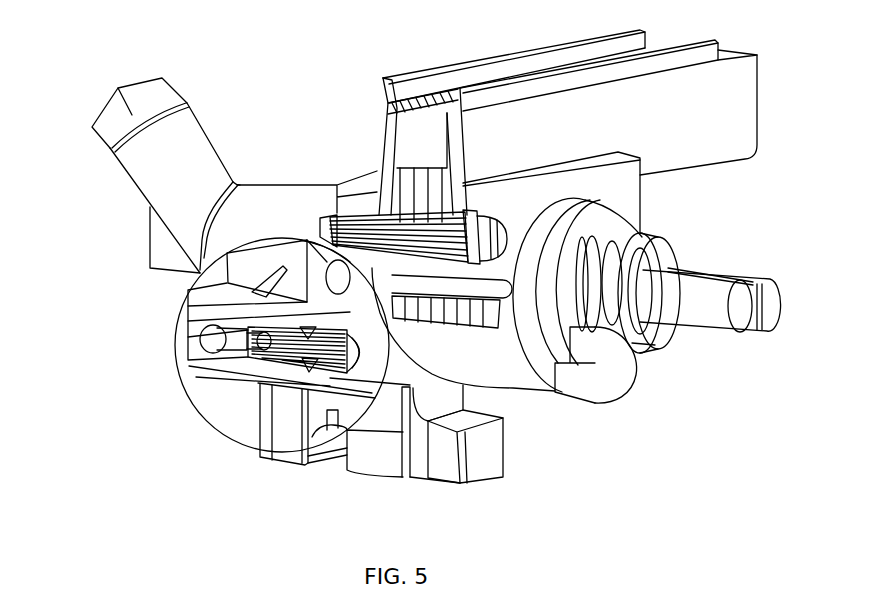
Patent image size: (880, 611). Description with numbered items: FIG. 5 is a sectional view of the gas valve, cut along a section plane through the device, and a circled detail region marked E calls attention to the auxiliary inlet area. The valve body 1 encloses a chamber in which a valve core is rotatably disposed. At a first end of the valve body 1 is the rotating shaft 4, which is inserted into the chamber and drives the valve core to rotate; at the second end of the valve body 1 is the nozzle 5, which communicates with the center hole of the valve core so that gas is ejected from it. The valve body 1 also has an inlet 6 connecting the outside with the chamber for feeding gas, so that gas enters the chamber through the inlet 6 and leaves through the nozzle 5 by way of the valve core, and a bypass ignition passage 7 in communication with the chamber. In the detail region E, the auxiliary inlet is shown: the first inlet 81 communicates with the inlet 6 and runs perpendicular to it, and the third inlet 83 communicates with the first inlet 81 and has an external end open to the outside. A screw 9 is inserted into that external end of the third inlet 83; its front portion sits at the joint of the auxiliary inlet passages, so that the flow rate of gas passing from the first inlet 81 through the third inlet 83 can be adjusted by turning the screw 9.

The valve body 1 is at (517, 372).
The rotating shaft 4 is at (705, 272).
The nozzle 5 is at (125, 86).
The inlet 6 is at (373, 474).
The bypass ignition passage 7 is at (304, 262).
The screw 9 is at (328, 370).
The first inlet 81 is at (207, 347).
The third inlet 83 is at (350, 375).
The detail region E is at (212, 263).